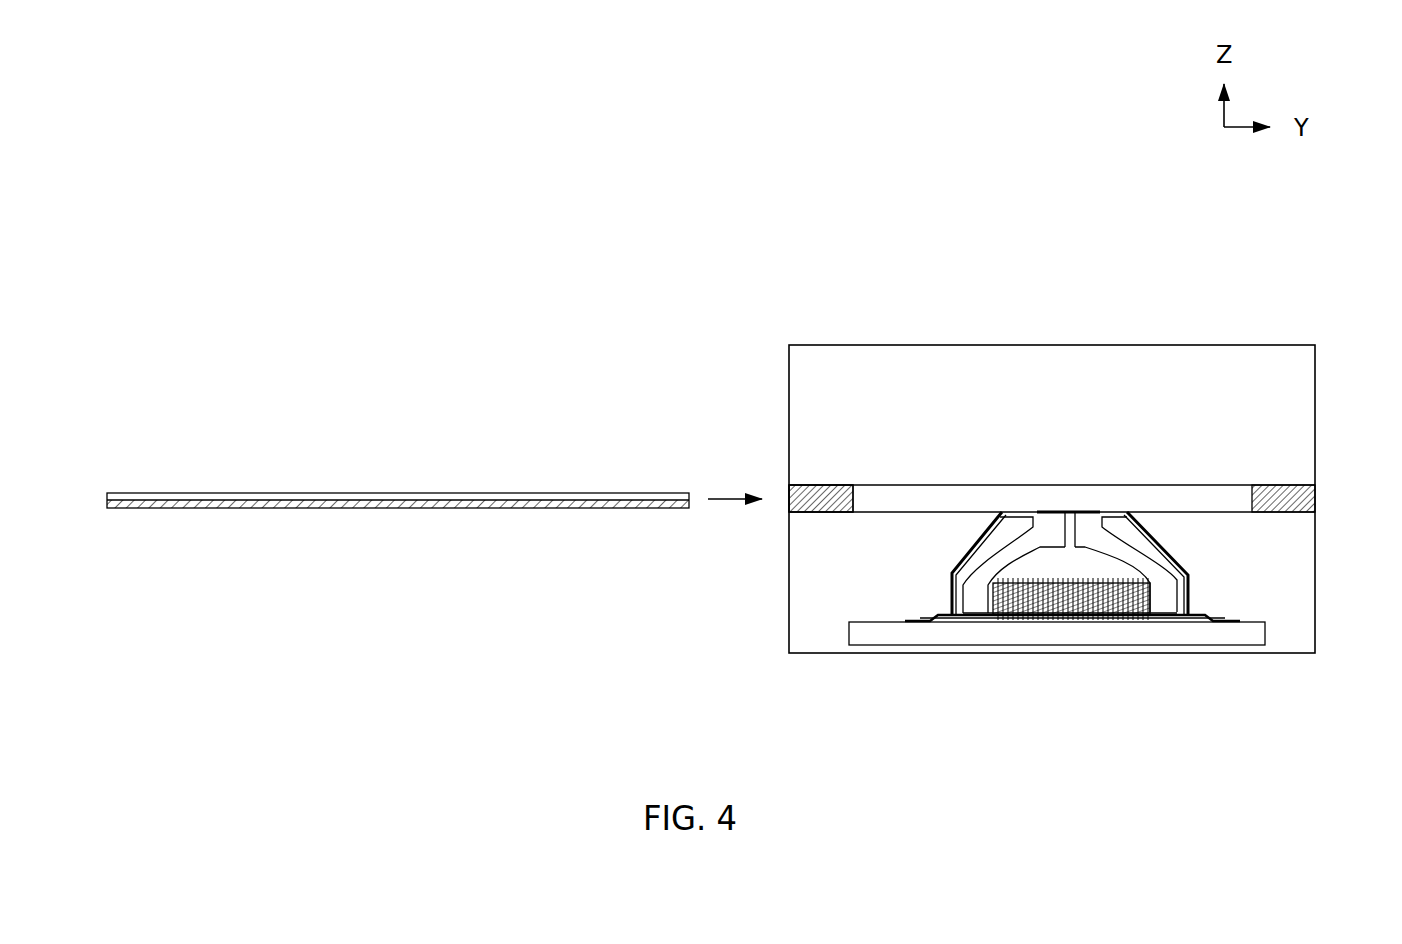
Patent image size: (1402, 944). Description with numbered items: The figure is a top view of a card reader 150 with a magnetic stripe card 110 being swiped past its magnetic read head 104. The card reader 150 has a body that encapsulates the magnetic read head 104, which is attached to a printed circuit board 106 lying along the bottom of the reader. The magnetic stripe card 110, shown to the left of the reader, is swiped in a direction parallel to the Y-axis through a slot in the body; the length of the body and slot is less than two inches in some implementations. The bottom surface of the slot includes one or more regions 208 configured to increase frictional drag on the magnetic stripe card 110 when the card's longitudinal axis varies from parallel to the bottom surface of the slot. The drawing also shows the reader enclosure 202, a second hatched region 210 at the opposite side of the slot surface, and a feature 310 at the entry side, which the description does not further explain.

The card reader 150 is at (728, 288).
The magnetic stripe card 110 is at (199, 495).
The housing 202 is at (1127, 345).
The region 208 is at (806, 485).
The gap / interface 310 is at (790, 505).
The right support / stop 210 is at (1290, 485).
The magnetic read head 104 is at (979, 549).
The printed circuit board 106 is at (1040, 645).